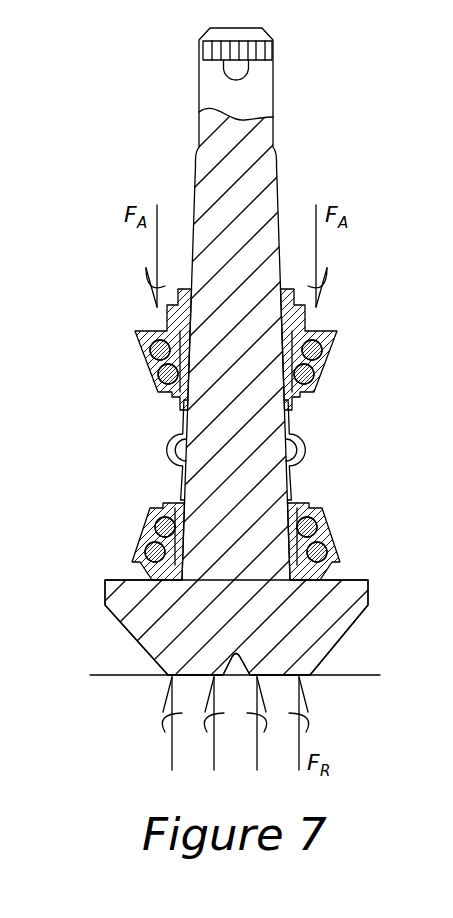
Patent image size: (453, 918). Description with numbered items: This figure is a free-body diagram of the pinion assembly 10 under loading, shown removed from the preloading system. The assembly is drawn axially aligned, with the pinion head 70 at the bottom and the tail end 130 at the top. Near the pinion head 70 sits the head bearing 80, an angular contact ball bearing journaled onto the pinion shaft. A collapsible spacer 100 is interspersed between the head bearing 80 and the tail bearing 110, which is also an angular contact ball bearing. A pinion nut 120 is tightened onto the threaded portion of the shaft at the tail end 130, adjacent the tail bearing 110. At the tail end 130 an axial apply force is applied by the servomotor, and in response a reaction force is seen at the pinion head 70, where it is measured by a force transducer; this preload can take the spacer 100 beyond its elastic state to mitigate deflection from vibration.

The pinion assembly 10 is at (94, 587).
The pinion head 70 is at (336, 631).
The head bearing 80 is at (338, 529).
The collapsible spacer 100 is at (297, 437).
The tail bearing 110 is at (325, 366).
The pinion nut 120 is at (152, 352).
The tail end 130 is at (292, 44).